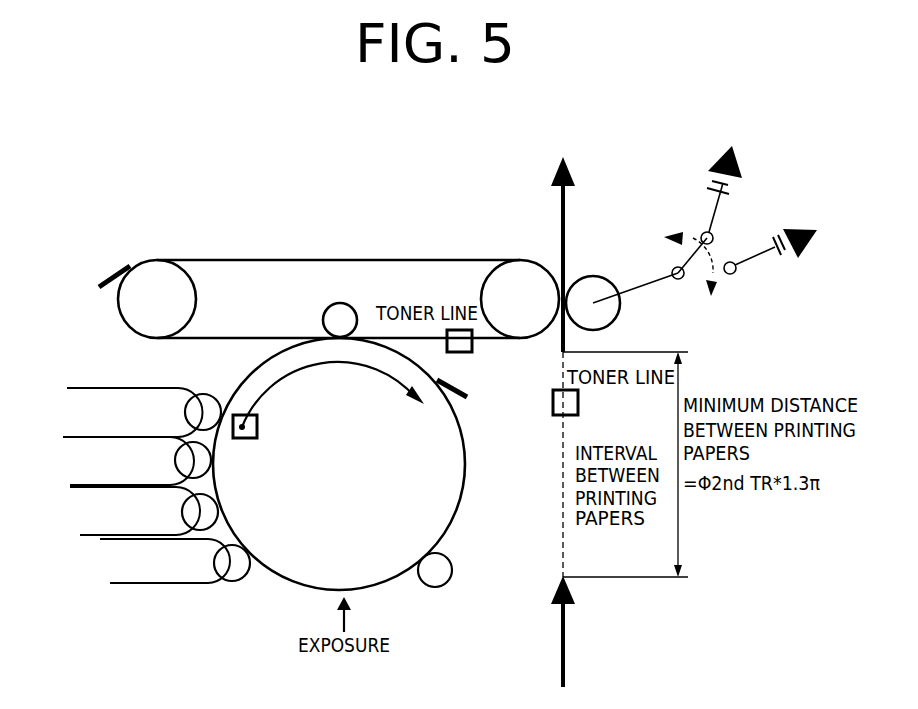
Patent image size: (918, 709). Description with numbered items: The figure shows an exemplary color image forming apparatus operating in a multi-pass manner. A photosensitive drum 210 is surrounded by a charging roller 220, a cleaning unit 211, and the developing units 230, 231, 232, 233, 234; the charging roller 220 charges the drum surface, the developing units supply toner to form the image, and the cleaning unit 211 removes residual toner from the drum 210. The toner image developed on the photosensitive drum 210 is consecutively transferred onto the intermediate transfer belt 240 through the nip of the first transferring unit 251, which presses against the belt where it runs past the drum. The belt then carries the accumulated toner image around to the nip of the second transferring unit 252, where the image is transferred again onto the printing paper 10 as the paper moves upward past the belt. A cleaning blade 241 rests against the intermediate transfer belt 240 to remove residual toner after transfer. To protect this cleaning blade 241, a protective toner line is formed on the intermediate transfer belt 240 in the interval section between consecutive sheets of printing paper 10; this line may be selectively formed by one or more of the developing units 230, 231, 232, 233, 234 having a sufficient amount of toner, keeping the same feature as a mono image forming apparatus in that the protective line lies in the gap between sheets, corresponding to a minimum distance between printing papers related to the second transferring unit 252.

The printing paper 10 is at (566, 196).
The OPC photosensitive drum 210 is at (465, 492).
The OPC cleaning unit 211 is at (468, 398).
The charging roller 220 is at (437, 587).
The developing unit 230 is at (137, 493).
The developing unit 231 is at (204, 394).
The developing unit 232 is at (178, 443).
The developing unit 233 is at (208, 532).
The developing unit 234 is at (228, 582).
The intermediate transfer belt 240 is at (143, 262).
The cleaning blade 241 is at (103, 284).
The first transferring unit 251 is at (360, 318).
The second transferring unit 252 is at (602, 280).